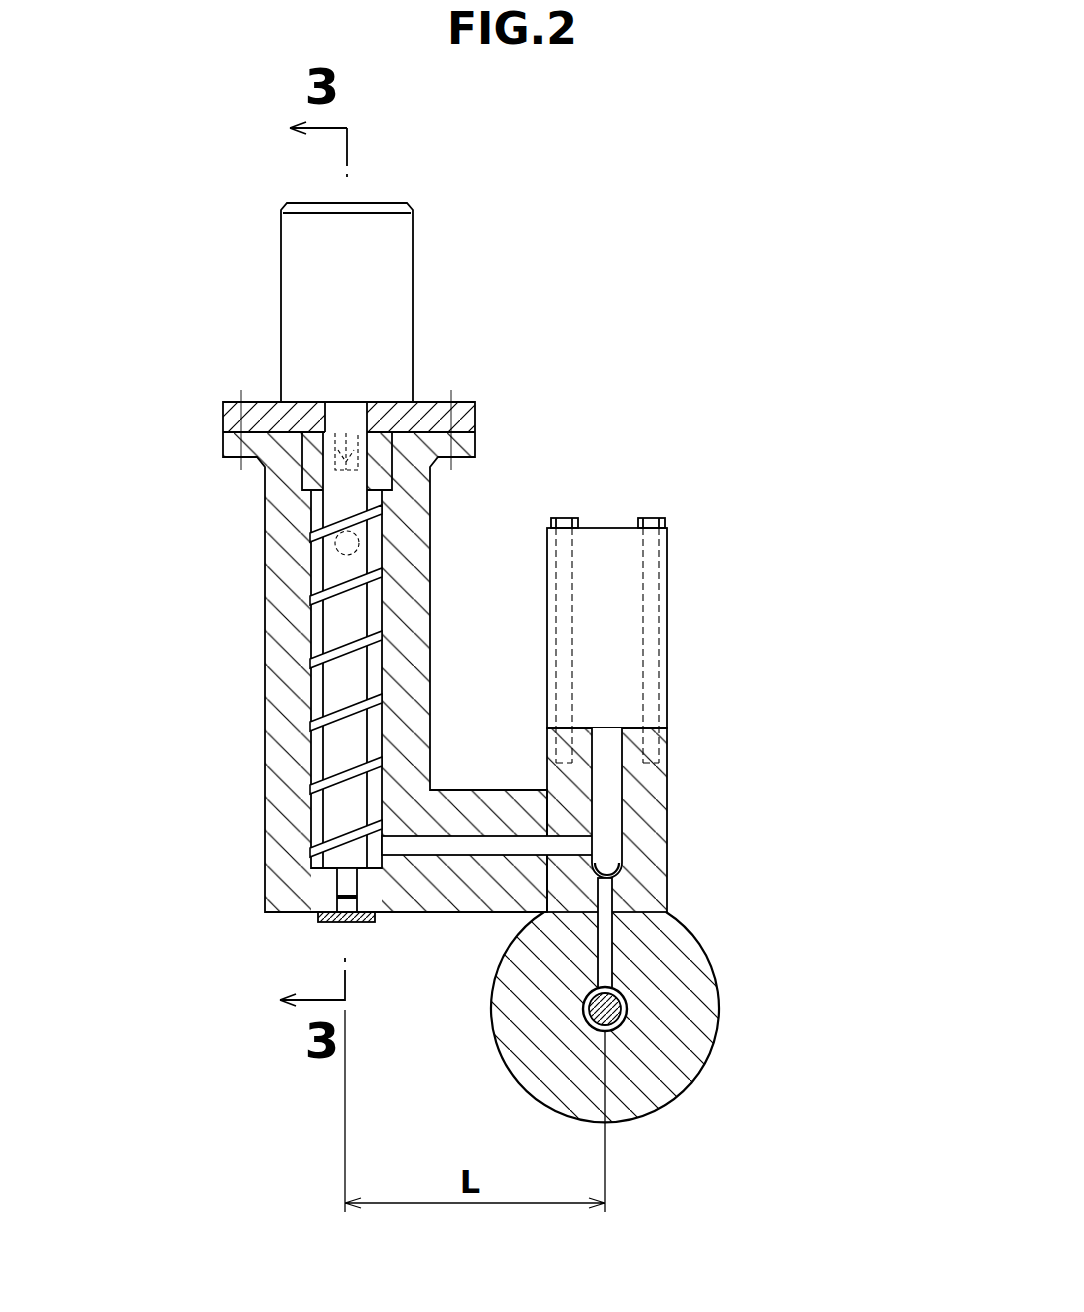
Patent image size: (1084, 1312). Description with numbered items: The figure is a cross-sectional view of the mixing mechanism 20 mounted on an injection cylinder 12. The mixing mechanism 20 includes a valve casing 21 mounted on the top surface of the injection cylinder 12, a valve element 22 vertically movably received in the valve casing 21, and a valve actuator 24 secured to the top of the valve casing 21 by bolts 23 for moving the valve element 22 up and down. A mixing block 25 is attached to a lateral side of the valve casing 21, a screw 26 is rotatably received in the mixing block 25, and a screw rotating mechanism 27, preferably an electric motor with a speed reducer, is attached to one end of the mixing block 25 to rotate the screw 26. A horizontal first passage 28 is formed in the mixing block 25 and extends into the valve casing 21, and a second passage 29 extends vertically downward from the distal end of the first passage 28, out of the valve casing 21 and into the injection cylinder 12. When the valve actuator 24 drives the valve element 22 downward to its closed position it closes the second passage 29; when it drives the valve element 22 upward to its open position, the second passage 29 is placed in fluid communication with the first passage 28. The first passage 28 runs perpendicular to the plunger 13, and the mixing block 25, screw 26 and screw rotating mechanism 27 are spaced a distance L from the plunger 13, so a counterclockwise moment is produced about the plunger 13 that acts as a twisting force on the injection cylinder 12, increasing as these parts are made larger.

The injection cylinder 12 is at (706, 1020).
The plunger 13 is at (600, 1012).
The mixing mechanism 20 is at (647, 387).
The valve casing 21 is at (662, 774).
The valve element 22 is at (612, 857).
The bolts 23 is at (650, 517).
The valve actuator 24 is at (664, 622).
The mixing block 25 is at (278, 810).
The screw 26 is at (338, 625).
The screw rotating mechanism 27 is at (300, 302).
The first passage 28 is at (436, 852).
The second passage 29 is at (605, 948).